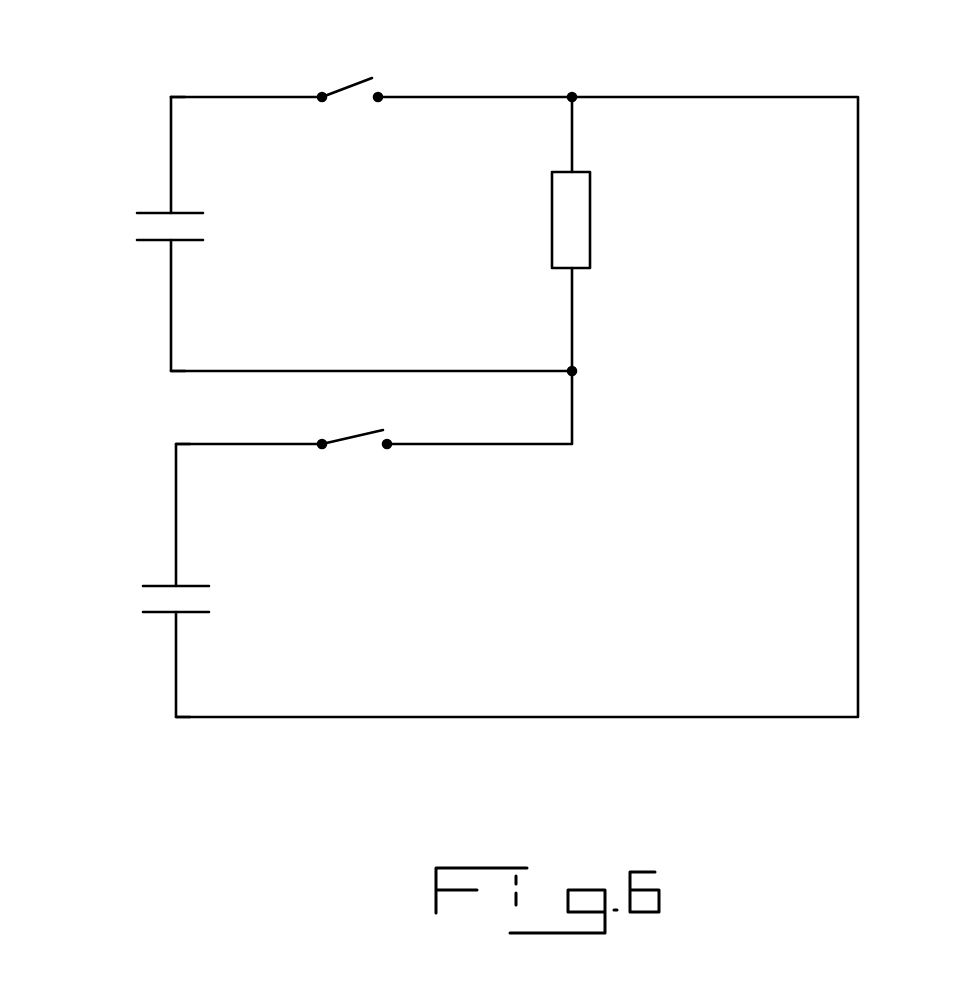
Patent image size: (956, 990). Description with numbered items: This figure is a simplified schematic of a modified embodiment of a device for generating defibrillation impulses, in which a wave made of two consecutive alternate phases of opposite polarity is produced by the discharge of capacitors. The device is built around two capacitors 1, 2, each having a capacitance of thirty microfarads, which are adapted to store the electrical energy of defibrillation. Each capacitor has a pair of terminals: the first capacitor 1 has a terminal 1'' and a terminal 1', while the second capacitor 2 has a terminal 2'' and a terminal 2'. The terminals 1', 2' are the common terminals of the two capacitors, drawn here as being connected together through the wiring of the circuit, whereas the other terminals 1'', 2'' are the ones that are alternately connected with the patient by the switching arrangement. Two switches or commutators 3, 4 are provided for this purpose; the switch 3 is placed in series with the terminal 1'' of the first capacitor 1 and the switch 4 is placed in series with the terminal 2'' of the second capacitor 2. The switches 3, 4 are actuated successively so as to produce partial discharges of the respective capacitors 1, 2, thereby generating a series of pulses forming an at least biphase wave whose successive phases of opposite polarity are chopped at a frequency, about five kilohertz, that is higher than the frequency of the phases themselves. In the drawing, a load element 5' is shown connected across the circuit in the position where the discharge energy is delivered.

The capacitor 1 is at (152, 233).
The capacitor 2 is at (181, 603).
The switch 3 is at (356, 63).
The switch 4 is at (358, 467).
The resistor 5' is at (592, 220).
The terminal 1'' is at (153, 71).
The common terminal 1' is at (141, 391).
The terminal 2'' is at (147, 436).
The common terminal 2' is at (148, 742).